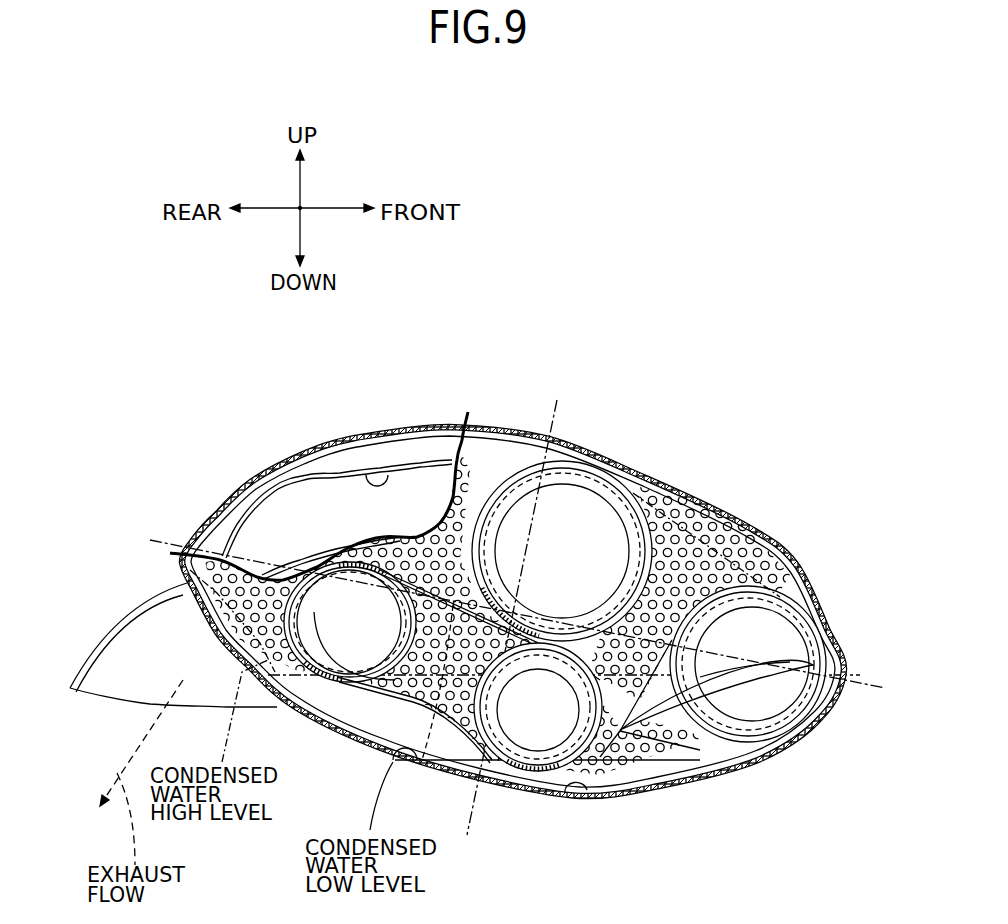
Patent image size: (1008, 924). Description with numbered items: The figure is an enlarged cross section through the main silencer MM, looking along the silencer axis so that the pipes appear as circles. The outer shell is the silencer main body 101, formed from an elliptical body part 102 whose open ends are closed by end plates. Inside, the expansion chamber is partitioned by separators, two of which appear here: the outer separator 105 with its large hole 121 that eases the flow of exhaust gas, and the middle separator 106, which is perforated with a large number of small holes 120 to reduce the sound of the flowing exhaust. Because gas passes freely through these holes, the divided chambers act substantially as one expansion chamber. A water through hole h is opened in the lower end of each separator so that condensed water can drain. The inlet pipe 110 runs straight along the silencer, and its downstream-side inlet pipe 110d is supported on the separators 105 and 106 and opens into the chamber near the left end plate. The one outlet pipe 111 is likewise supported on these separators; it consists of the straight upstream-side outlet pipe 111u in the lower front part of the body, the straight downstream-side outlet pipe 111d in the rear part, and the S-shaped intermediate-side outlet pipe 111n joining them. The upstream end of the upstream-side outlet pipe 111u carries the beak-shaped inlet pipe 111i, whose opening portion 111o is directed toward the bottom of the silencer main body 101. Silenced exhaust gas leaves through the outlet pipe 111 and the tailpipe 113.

The silencer main body 101 is at (637, 457).
The elliptical body part 102 is at (290, 455).
The separator 105 is at (247, 498).
The separator 106 is at (782, 577).
The inlet pipe 110 is at (540, 462).
The downstream-side inlet pipe 110d is at (590, 468).
The outlet pipe 111 is at (390, 708).
The downstream-side outlet pipe 111d is at (330, 560).
The beak-shaped inlet pipe 111i is at (768, 643).
The intermediate-side outlet pipe 111n is at (533, 738).
The opening portion 111o is at (657, 742).
The upstream-side outlet pipe 111u is at (793, 720).
The tailpipe 113 is at (143, 653).
The small holes 120 is at (677, 488).
The large hole 121 is at (387, 478).
The water through hole h is at (577, 793).
The main silencer MM is at (527, 348).